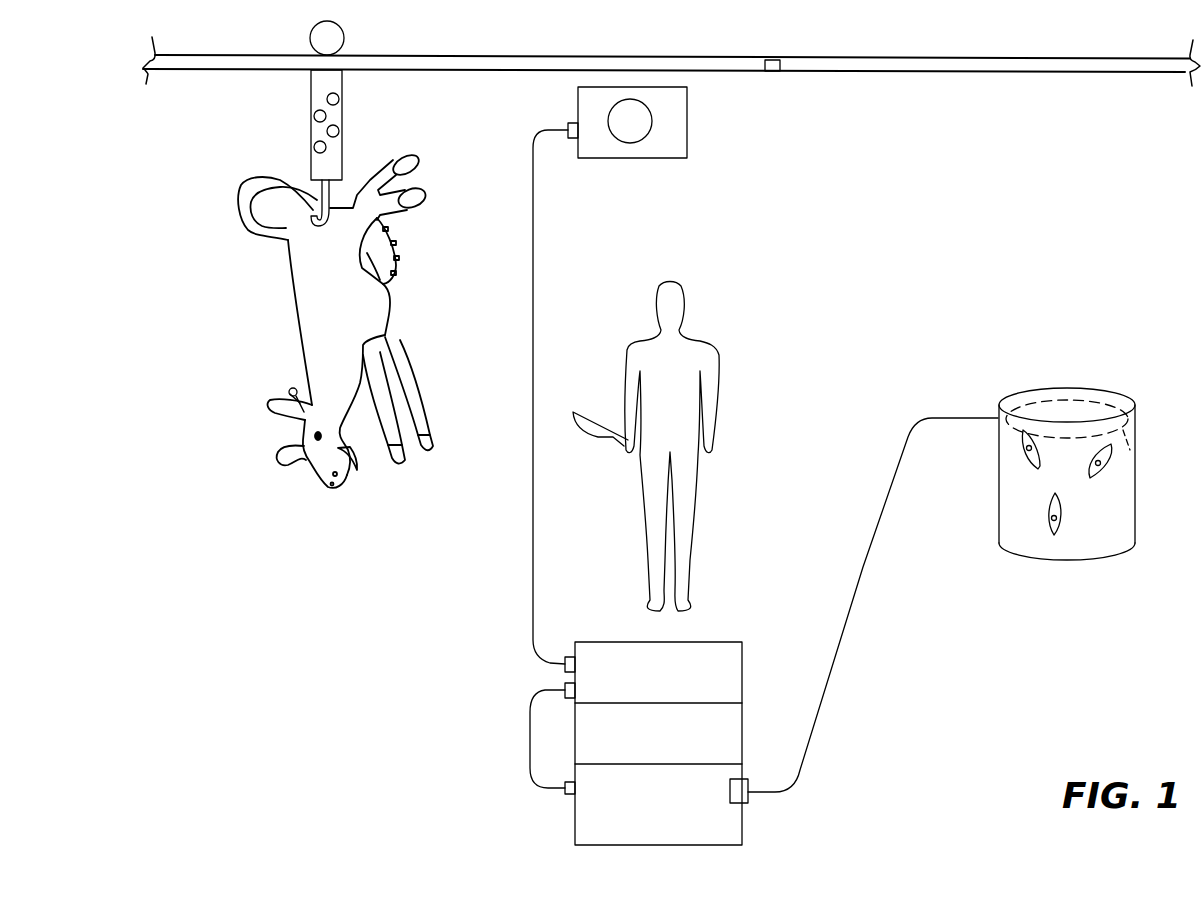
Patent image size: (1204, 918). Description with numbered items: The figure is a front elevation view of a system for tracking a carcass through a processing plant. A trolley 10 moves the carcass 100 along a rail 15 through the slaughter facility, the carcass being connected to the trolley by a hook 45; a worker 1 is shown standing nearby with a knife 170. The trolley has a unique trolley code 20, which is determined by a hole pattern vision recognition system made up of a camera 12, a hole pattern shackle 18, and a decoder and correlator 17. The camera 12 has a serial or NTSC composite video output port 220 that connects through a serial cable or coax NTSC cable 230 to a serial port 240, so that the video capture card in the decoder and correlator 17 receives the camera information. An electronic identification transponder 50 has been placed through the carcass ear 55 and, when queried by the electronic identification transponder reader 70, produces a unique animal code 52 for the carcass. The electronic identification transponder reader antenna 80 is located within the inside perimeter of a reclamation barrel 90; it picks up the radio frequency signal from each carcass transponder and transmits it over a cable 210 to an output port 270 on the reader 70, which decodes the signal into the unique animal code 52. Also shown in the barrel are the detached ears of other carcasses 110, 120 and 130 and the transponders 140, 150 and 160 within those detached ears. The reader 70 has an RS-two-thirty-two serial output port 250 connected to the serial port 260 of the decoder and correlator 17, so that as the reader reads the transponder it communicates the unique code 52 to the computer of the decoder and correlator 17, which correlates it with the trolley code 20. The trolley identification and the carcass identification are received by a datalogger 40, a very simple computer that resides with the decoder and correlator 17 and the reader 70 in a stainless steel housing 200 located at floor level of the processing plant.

The worker 1 is at (718, 395).
The trolley 10 is at (313, 30).
The camera 12 is at (688, 147).
The rail 15 is at (885, 56).
The decoder and correlator 17 is at (679, 696).
The hole pattern shackle 18 is at (311, 98).
The trolley code 20 is at (774, 71).
The datalogger 40 is at (679, 756).
The hook 45 is at (318, 210).
The electronic identification transponder 50 is at (288, 388).
The animal code 52 is at (291, 386).
The carcass ear 55 is at (287, 395).
The electronic identification transponder reader 70 is at (679, 836).
The electronic identification transponder reader antenna 80 is at (1140, 458).
The reclamation barrel 90 is at (1105, 392).
The carcass 100 is at (290, 292).
The detached ear of other carcass 110 is at (1028, 458).
The detached ear of other carcass 120 is at (1052, 532).
The detached ear of other carcass 130 is at (1098, 478).
The transponder 140 is at (1100, 466).
The transponder 150 is at (1022, 455).
The transponder 160 is at (1058, 530).
The knife 170 is at (585, 440).
The stainless steel housing 200 is at (678, 726).
The cable 210 is at (864, 568).
The output port 220 is at (568, 122).
The serial cable or coax NTSC cable 230 is at (530, 545).
The serial port 240 is at (570, 655).
The serial output port 250 is at (564, 791).
The serial port 260 is at (530, 750).
The output port 270 is at (750, 800).